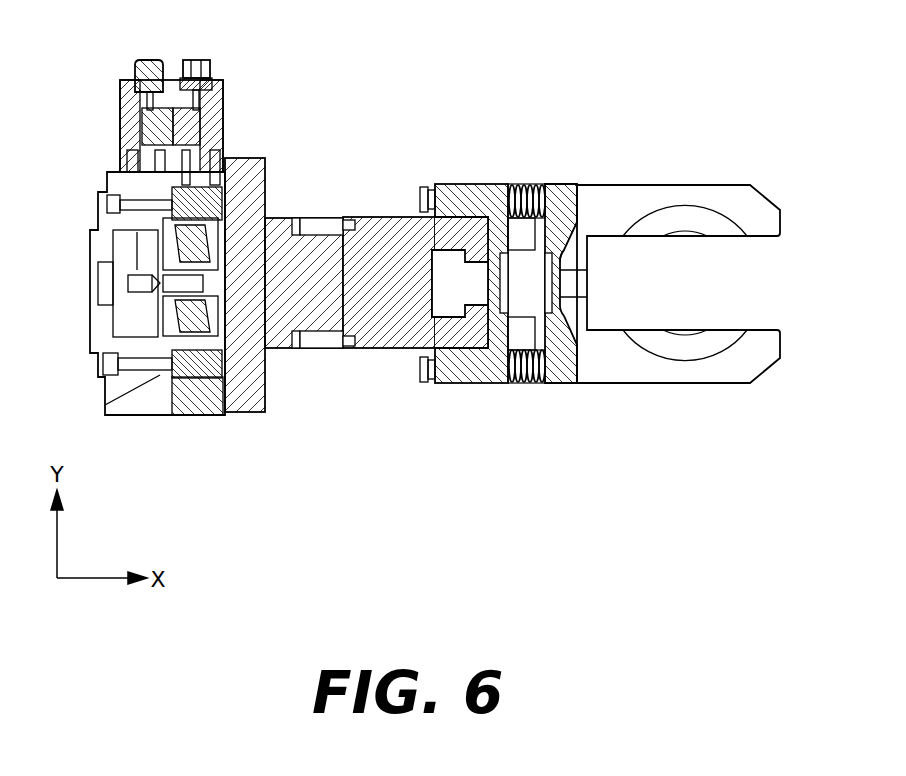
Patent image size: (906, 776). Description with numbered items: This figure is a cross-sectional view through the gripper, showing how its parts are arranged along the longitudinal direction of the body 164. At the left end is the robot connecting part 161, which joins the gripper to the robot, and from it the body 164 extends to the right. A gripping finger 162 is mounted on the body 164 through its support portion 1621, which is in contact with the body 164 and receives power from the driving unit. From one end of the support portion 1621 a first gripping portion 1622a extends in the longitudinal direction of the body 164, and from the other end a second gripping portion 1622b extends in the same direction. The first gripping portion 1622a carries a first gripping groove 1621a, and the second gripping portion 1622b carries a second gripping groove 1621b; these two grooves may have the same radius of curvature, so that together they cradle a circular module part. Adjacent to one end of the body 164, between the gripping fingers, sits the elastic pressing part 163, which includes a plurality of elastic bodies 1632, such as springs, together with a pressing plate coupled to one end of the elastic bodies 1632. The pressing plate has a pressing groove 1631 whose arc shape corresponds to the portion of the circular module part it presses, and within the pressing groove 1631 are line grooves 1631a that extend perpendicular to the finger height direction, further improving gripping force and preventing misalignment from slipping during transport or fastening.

The robot connecting part 161 is at (90, 249).
The body 164 is at (378, 217).
The support portion 1621 is at (455, 184).
The elastic body 1632 is at (525, 184).
The elastic pressing part 163 is at (560, 184).
The pressing groove 1631 is at (570, 318).
The line groove 1631a is at (570, 245).
The gripping finger 162 is at (684, 283).
The first gripping portion 1622a is at (620, 186).
The second gripping portion 1622b is at (622, 383).
The first gripping groove 1621a is at (690, 237).
The second gripping groove 1621b is at (690, 330).